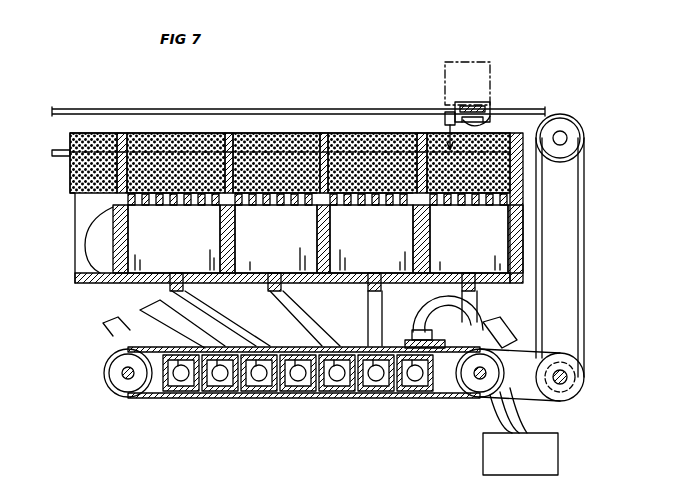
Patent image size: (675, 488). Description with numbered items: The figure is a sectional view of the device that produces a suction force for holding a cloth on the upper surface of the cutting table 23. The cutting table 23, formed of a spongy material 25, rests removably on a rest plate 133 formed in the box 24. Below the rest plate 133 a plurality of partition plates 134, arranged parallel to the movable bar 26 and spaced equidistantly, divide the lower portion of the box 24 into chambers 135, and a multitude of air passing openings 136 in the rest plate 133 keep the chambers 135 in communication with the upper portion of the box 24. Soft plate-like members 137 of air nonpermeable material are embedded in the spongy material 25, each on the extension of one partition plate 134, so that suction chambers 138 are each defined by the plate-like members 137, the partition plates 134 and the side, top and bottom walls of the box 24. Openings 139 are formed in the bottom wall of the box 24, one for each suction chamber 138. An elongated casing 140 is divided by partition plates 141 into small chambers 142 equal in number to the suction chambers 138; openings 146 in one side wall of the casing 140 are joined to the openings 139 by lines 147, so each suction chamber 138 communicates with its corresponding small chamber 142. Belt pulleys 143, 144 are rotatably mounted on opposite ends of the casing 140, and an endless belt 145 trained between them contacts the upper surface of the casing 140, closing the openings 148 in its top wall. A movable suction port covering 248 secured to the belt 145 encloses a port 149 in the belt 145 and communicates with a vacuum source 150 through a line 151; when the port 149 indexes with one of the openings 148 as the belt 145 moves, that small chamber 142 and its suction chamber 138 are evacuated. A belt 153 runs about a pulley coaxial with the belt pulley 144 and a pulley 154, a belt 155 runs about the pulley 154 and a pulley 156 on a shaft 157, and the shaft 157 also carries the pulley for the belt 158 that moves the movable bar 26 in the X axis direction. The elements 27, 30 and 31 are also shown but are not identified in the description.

The cutting table 23 is at (88, 128).
The box 24 is at (516, 253).
The spongy material 25 is at (294, 140).
The movable bar 26 is at (458, 110).
The nozzle 27 is at (452, 110).
The drive unit 30 is at (490, 76).
The guide member 31 is at (489, 114).
The rest plate 133 is at (128, 199).
The partition plates 134 is at (95, 246).
The chambers 135 is at (198, 254).
The air passing openings 136 is at (452, 206).
The soft plate-like members 137 is at (122, 133).
The suction chambers 138 is at (100, 133).
The openings 139 is at (168, 292).
The elongated casing 140 is at (160, 395).
The partition plates 141 is at (268, 392).
The small chambers 142 is at (174, 388).
The belt pulley 143 is at (108, 373).
The belt pulley 144 is at (482, 393).
The endless belt 145 is at (436, 398).
The openings 146 is at (186, 380).
The line 147 is at (137, 333).
The openings 148 is at (222, 380).
The port 149 is at (476, 380).
The vacuum source 150 is at (558, 460).
The line 151 is at (540, 412).
The belt 153 is at (520, 355).
The pulley 154 is at (584, 376).
The belt 155 is at (585, 226).
The pulley 156 is at (568, 160).
The shaft 157 is at (558, 130).
The belt 158 is at (362, 110).
The movable suction port covering 248 is at (412, 328).